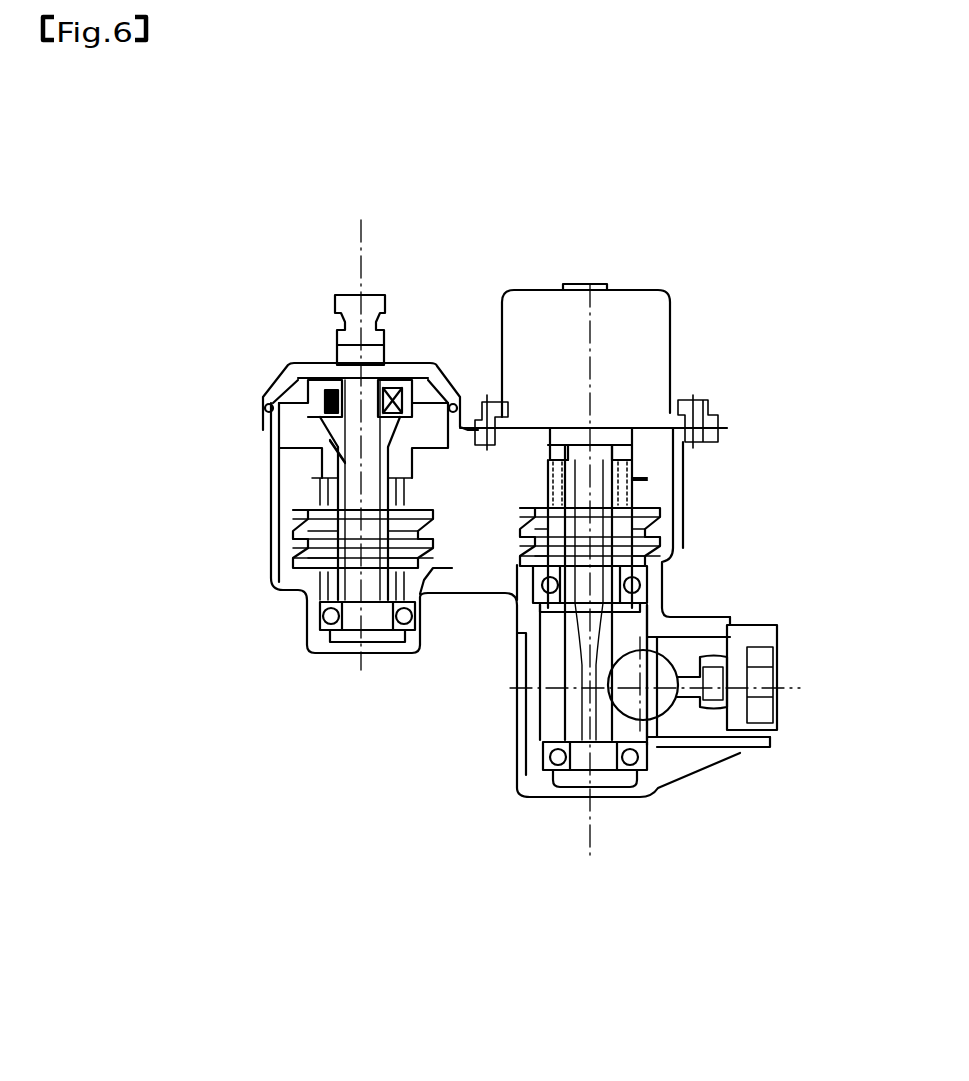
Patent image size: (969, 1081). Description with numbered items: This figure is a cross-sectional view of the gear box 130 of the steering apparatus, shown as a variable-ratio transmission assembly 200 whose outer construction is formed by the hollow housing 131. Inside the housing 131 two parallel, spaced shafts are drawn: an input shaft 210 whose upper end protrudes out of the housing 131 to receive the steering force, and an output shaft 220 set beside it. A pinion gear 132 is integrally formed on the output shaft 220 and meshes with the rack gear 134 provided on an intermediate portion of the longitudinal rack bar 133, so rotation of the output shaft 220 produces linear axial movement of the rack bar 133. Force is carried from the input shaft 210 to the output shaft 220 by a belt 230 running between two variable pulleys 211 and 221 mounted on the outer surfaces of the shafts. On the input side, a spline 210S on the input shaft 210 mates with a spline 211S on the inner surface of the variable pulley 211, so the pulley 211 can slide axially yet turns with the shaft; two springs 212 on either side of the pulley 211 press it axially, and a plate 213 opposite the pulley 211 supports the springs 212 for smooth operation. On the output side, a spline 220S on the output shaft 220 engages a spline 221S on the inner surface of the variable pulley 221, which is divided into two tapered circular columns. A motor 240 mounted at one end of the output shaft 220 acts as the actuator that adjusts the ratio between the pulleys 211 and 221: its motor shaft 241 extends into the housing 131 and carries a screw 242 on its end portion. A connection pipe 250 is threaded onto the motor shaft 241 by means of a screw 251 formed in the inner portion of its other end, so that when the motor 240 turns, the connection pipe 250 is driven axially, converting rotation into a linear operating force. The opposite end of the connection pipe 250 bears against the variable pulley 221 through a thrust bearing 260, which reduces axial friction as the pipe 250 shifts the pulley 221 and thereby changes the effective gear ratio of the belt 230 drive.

The spindle unit 200 is at (472, 352).
The input shaft 210 is at (351, 295).
The spline 210S is at (330, 440).
The variable pulley 211 is at (300, 560).
The spline 211S is at (296, 360).
The springs 212 is at (335, 486).
The plate 213 is at (273, 456).
The output shaft 220 is at (655, 570).
The spline 220S is at (636, 492).
The variable pulley 221 is at (645, 500).
The spline 221S is at (728, 389).
The belt 230 is at (515, 565).
The motor 240 is at (522, 307).
The motor shaft 241 is at (595, 428).
The screw 242 is at (603, 430).
The connection pipe 250 is at (557, 440).
The screw 251 is at (428, 642).
The thrust bearing 260 is at (535, 565).
The gear box 130 is at (798, 650).
The housing 131 is at (730, 622).
The pinion gear 132 is at (540, 795).
The rack bar 133 is at (667, 707).
The rack gear 134 is at (647, 760).